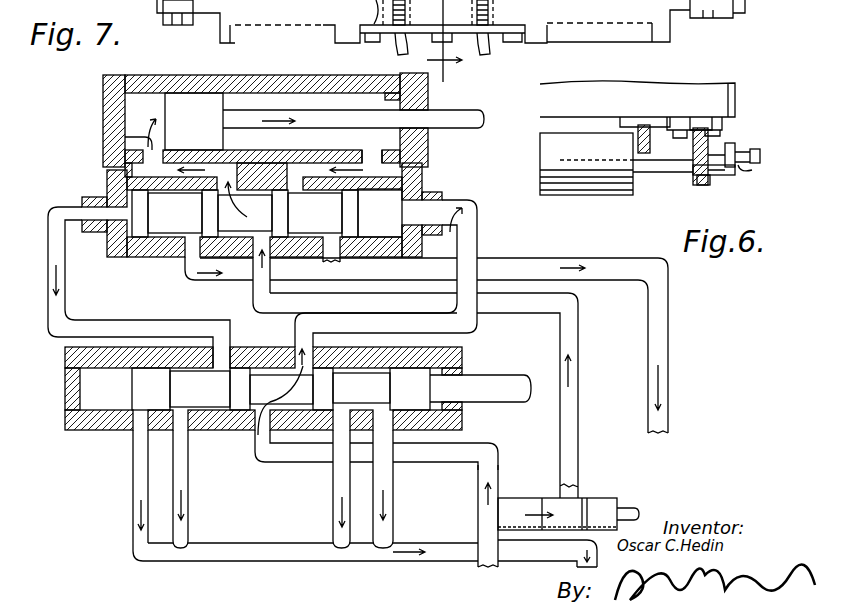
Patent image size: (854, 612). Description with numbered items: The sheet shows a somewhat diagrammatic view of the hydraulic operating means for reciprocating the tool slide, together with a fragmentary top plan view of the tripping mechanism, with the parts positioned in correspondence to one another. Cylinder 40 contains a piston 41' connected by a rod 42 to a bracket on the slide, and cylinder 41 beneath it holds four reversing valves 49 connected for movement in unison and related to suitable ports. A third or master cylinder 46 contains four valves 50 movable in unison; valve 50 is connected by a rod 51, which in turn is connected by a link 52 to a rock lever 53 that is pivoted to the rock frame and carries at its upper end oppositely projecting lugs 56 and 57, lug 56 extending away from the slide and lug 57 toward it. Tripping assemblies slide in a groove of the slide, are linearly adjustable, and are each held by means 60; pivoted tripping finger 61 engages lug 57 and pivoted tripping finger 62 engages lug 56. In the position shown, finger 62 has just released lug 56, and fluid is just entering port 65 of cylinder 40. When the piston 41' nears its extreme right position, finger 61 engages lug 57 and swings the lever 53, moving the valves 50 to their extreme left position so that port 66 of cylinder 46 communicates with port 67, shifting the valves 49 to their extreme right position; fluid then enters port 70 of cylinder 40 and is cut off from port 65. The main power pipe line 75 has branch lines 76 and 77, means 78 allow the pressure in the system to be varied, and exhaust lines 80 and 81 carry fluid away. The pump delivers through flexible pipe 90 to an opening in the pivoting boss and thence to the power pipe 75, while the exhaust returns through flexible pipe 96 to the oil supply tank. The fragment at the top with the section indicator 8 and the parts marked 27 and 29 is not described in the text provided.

In FIG. 7, the section line indicator 8 is at (444, 45).
In FIG. 7, the bracket 27 is at (173, 26).
In FIG. 7, the bolt 29 is at (363, 12).
In FIG. 7, the cylinder 40 is at (222, 90).
In FIG. 7, the cylinder 41 is at (262, 227).
In FIG. 7, the piston 41' is at (222, 99).
In FIG. 7, the rod 42 is at (473, 113).
In FIG. 7, the master cylinder 46 is at (118, 352).
In FIG. 6, the master cylinder 46 is at (613, 184).
In FIG. 7, the valves 49 is at (348, 212).
In FIG. 7, the valves 50 is at (158, 398).
In FIG. 7, the rod 51 is at (502, 378).
In FIG. 6, the rod 51 is at (659, 168).
In FIG. 6, the link 52 is at (753, 170).
In FIG. 6, the rock lever 53 is at (716, 173).
In FIG. 6, the lug 56 is at (703, 186).
In FIG. 6, the lug 57 is at (735, 147).
In FIG. 6, the holding means 60 is at (668, 121).
In FIG. 6, the tripping finger 61 is at (647, 130).
In FIG. 6, the tripping finger 62 is at (708, 140).
In FIG. 7, the port 65 is at (103, 137).
In FIG. 7, the port 66 is at (253, 437).
In FIG. 7, the port 67 is at (232, 343).
In FIG. 7, the port 70 is at (376, 154).
In FIG. 7, the main power pipe line 75 is at (490, 569).
In FIG. 7, the branch line 76 is at (86, 325).
In FIG. 7, the branch line 77 is at (578, 388).
In FIG. 7, the pressure varying means 78 is at (598, 508).
In FIG. 7, the exhaust line 80 is at (668, 356).
In FIG. 7, the exhaust line 81 is at (545, 549).
In FIG. 7, the flexible pipe 90 is at (398, 52).
In FIG. 7, the flexible pipe 96 is at (488, 52).